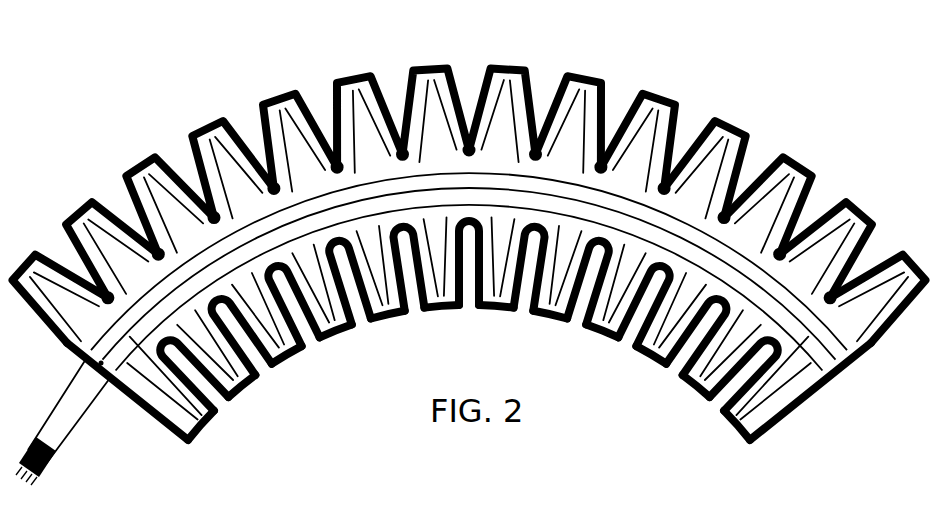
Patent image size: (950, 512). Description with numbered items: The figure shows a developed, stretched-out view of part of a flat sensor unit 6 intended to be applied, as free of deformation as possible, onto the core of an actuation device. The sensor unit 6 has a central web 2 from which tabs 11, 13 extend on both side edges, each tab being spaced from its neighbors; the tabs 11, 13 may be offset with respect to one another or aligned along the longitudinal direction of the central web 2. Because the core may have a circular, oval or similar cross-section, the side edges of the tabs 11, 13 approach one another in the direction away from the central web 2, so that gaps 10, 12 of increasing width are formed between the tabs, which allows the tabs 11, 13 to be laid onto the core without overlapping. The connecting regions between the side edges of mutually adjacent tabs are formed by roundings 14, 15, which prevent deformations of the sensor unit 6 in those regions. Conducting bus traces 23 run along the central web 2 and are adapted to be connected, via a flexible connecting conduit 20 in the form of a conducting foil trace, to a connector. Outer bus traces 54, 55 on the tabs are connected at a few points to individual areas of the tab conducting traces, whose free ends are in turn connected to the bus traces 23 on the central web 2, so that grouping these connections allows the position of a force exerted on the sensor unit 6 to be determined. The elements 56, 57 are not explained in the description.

The sensor unit 6 is at (341, 62).
The rounding 14 is at (667, 185).
The gap 10 is at (758, 160).
The tab 11 is at (800, 175).
The outer bus trace 54 is at (877, 248).
The outer bus trace 55 is at (848, 229).
The central web 2 is at (84, 362).
The connecting conduit 20 is at (66, 430).
The slot fold lines 57 is at (230, 379).
The inner edge segment 56 is at (250, 377).
The rounding 15 is at (680, 363).
The gap 12 is at (723, 398).
The tab 13 is at (732, 427).
The conducting bus trace 23 is at (852, 353).